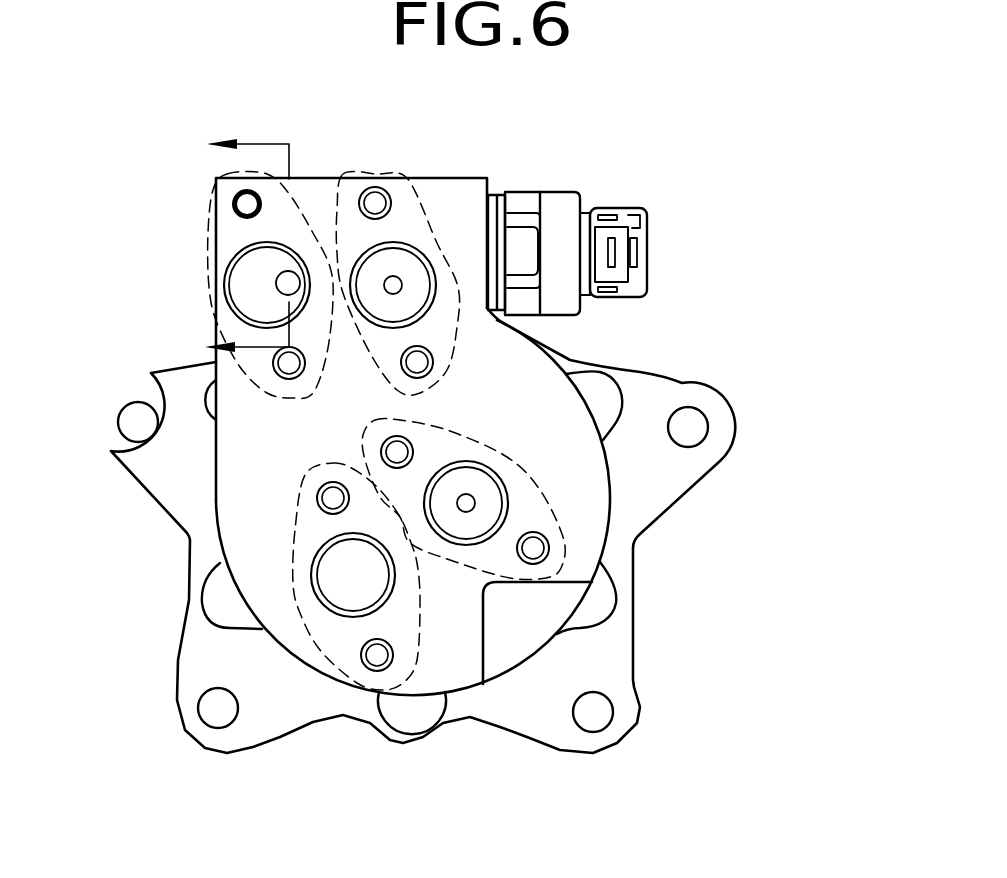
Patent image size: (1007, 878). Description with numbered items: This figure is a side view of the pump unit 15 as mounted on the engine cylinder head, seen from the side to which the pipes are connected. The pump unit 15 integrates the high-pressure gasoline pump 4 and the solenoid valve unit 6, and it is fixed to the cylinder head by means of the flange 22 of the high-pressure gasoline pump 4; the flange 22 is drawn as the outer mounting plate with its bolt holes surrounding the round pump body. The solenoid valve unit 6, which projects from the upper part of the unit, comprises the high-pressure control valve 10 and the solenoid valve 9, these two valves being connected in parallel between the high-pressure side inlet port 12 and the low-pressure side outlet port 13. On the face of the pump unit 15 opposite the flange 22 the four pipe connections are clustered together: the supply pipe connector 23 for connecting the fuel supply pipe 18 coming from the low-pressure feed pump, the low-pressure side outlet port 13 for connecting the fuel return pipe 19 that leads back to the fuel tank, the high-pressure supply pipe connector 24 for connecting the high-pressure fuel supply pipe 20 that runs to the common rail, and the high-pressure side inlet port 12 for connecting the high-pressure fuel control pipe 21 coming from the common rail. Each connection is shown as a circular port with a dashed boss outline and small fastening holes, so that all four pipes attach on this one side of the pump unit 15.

The high-pressure gasoline pump 4 is at (613, 500).
The solenoid valve unit 6 is at (668, 113).
The solenoid valve 9 is at (633, 220).
The high-pressure control valve 10 is at (560, 202).
The high-pressure side inlet port 12 is at (227, 276).
The low-pressure side outlet port 13 is at (380, 327).
The pump unit 15 is at (722, 322).
The fuel supply pipe 18 is at (466, 503).
The fuel return pipe 19 is at (393, 285).
The high-pressure fuel supply pipe 20 is at (353, 575).
The high-pressure fuel control pipe 21 is at (267, 285).
The flange 22 is at (633, 578).
The supply pipe connector 23 is at (487, 539).
The high-pressure supply pipe connector 24 is at (345, 612).